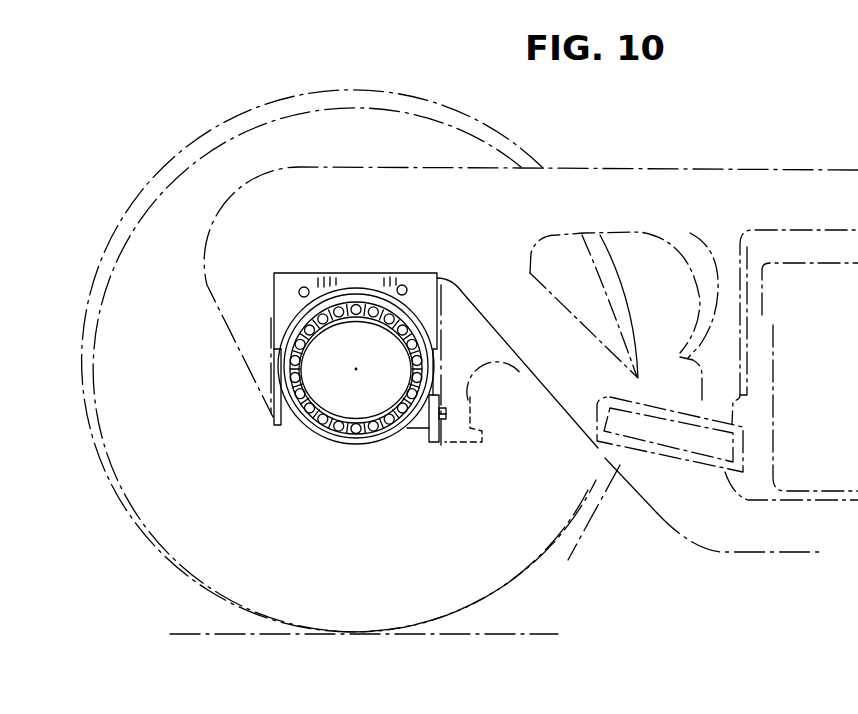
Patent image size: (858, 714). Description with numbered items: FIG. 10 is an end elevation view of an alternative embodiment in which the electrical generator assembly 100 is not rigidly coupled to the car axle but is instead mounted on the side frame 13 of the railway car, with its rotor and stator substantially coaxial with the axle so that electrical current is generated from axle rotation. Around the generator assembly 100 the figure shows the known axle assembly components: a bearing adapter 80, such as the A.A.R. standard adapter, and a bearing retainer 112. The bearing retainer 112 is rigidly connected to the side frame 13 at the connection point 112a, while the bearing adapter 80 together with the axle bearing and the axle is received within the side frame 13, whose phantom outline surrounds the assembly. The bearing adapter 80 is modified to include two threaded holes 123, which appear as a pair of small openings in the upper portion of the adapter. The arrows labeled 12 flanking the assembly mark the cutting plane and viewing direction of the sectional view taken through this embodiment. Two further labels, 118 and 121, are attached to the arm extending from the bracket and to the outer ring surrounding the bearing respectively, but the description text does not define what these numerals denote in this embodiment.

The section line 12- 12 is at (363, 227).
The side frame 13 is at (249, 370).
The bearing adapter 80 is at (274, 303).
The electrical generator assembly 100 is at (323, 446).
The bearing retainer 112 is at (415, 432).
The connection point 112a is at (448, 414).
The arm 118 is at (456, 283).
The bearing outer ring 121 is at (282, 346).
The threaded holes 123 is at (302, 288).